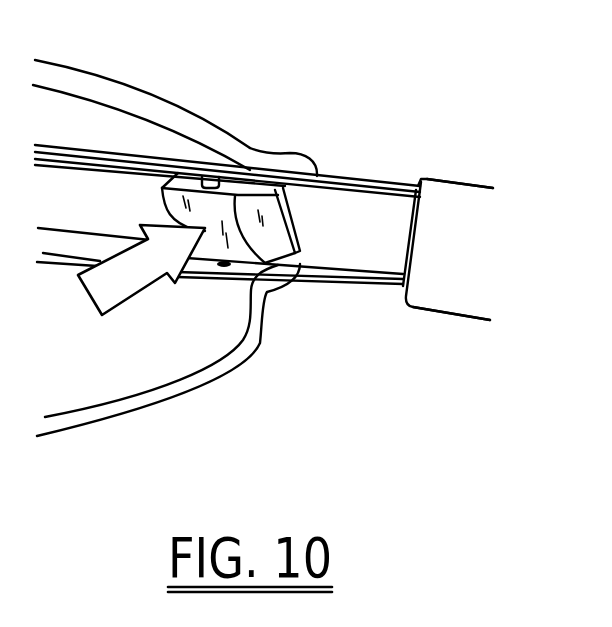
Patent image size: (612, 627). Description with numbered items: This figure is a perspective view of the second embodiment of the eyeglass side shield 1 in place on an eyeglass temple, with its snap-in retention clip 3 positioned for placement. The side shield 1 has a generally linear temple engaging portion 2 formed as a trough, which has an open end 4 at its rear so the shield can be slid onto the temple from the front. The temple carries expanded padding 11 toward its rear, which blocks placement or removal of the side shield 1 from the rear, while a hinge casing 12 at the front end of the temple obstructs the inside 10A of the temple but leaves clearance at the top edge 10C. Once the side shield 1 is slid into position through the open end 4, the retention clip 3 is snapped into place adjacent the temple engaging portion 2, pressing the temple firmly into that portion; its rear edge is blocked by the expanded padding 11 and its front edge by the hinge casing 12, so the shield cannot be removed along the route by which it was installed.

The side shield 1 is at (188, 88).
The temple engaging portion 2 is at (277, 148).
The retention clip 3 is at (223, 238).
The open end 4 is at (318, 172).
The inside of the temple 10A is at (358, 237).
The top edge of the temple 10C is at (403, 181).
The expanded padding 11 is at (483, 217).
The hinge casing 12 is at (117, 193).